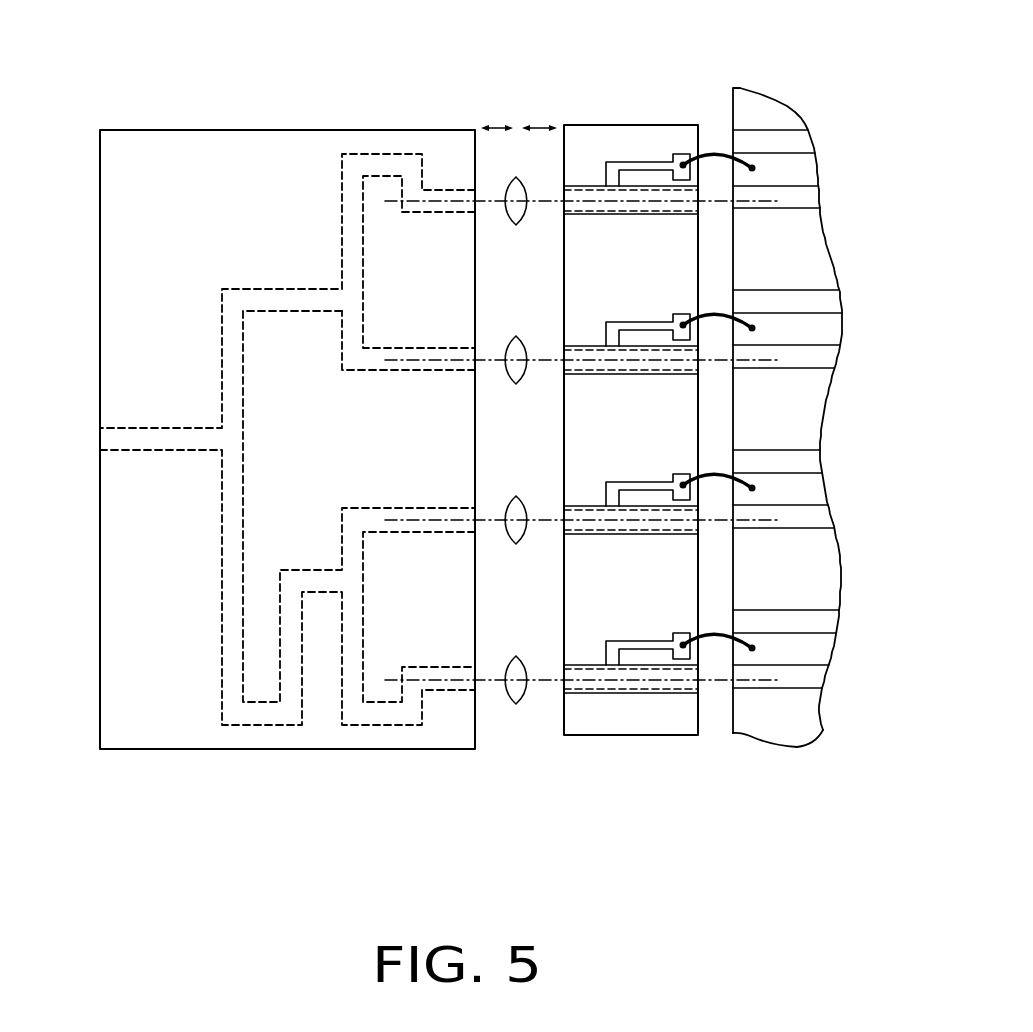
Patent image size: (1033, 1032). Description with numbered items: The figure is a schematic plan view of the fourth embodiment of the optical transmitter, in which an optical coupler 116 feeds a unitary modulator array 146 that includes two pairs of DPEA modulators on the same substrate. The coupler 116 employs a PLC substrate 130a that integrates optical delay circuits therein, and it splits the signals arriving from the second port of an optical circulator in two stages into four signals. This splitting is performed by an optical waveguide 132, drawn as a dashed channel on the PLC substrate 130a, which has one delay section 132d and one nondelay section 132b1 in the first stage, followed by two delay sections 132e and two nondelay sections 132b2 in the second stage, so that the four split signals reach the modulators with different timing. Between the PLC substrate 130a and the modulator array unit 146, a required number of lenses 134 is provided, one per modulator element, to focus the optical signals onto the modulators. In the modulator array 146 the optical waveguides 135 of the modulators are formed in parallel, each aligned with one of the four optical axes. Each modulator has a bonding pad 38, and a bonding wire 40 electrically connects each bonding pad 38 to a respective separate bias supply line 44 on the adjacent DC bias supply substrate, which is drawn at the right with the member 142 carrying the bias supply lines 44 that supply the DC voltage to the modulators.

The optical coupler 116 is at (123, 118).
The PLC substrate 130a is at (312, 130).
The optical waveguide 132 is at (250, 290).
The delay sections 132e is at (375, 154).
The nondelay section 132b1 is at (275, 311).
The nondelay sections 132b2 is at (437, 507).
The delay section 132d is at (258, 725).
The lenses 134 is at (516, 177).
The optical waveguides 135 is at (585, 690).
The modulator array 146 is at (607, 140).
The bonding pad 38 is at (684, 153).
The bonding wire 40 is at (712, 150).
The circuit board 142 is at (773, 115).
The bias supply line 44 is at (805, 173).